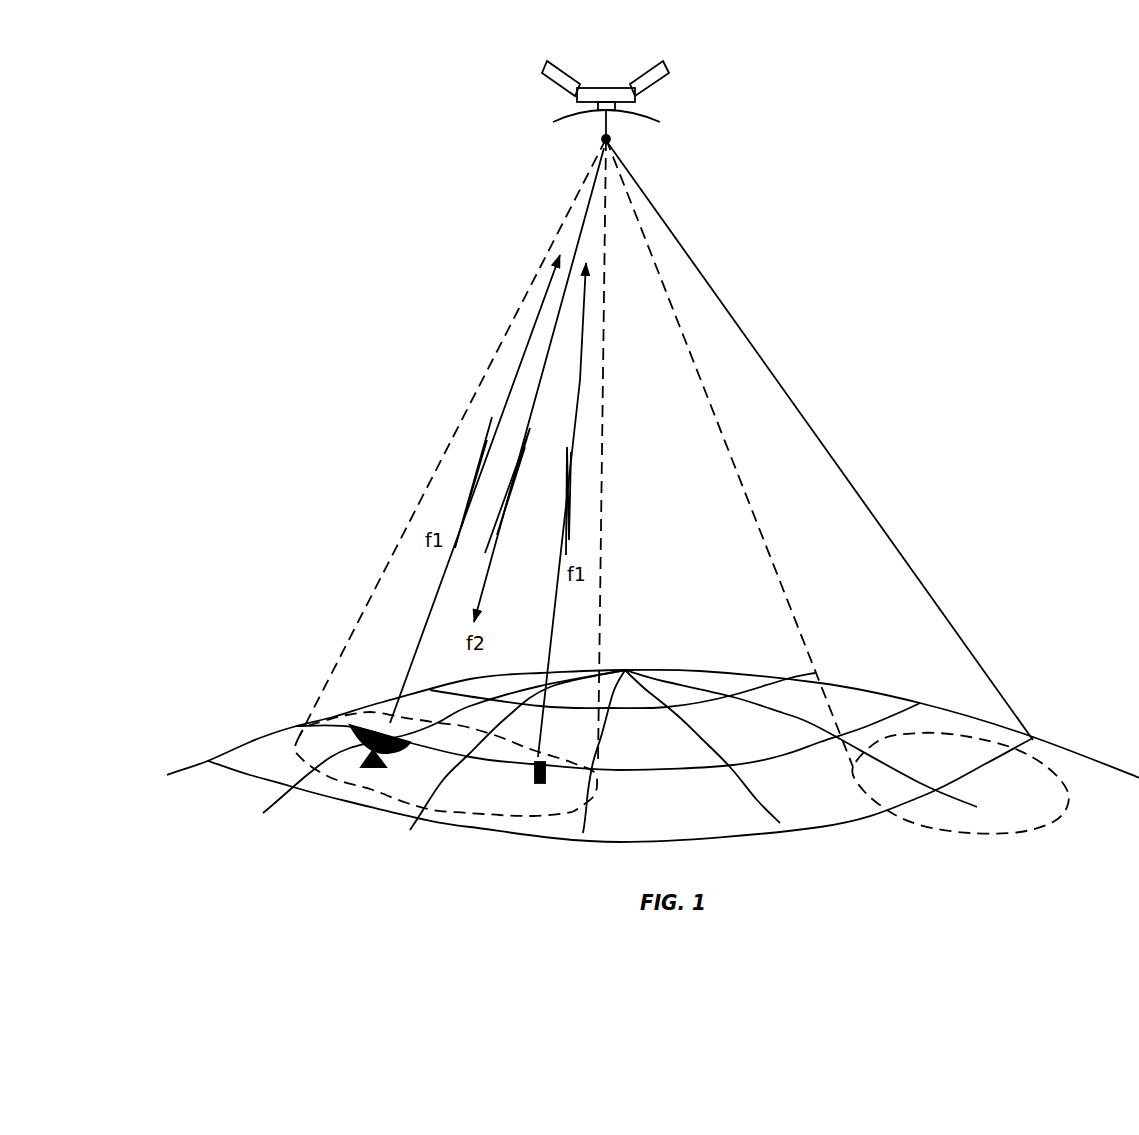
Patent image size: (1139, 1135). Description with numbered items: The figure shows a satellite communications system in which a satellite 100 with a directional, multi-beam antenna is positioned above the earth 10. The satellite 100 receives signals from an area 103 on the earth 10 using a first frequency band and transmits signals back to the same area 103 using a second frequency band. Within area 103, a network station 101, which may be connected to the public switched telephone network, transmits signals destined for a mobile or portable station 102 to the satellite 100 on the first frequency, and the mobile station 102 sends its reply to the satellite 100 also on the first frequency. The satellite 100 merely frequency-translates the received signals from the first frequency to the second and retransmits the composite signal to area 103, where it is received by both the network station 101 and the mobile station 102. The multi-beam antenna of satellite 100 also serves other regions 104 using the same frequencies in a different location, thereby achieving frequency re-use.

The satellite 100 is at (668, 72).
The earth 10 is at (864, 682).
The network station 101 is at (382, 752).
The mobile station 102 is at (535, 773).
The area 103 is at (295, 728).
The other region 104 is at (1020, 820).